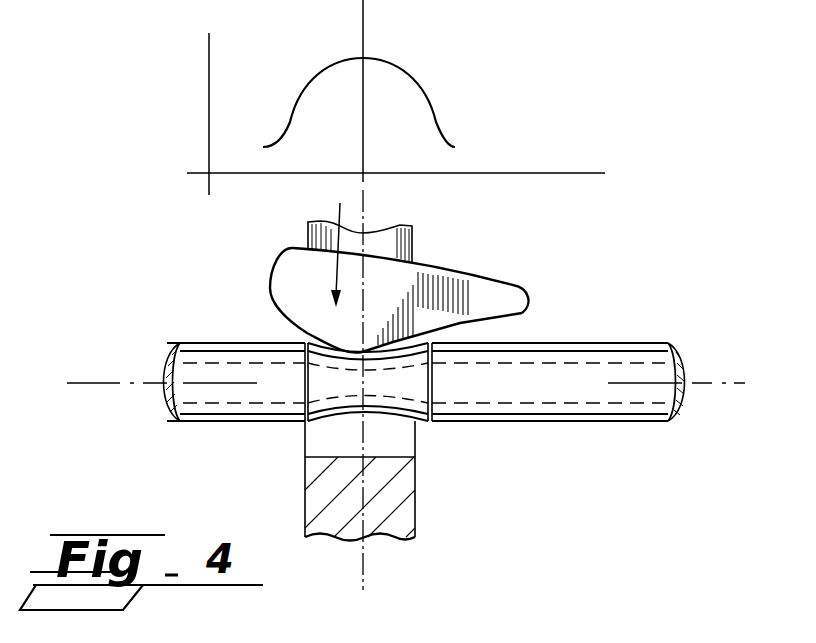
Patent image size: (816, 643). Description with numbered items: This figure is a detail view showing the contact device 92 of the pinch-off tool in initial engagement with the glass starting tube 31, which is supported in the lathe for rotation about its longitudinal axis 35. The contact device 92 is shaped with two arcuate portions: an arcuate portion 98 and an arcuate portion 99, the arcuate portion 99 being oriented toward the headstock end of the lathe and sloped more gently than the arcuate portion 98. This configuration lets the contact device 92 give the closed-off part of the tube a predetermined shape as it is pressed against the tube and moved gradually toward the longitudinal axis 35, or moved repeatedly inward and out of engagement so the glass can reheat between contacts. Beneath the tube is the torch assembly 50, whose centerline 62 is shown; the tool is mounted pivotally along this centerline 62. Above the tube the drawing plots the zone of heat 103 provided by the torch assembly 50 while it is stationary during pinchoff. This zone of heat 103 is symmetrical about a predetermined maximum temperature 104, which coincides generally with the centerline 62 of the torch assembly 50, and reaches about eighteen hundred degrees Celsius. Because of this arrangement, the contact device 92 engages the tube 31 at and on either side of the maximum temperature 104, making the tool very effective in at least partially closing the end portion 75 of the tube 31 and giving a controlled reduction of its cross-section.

The maximum temperature 104 is at (363, 17).
The zone of heat 103 is at (427, 97).
The contact device 92 is at (438, 272).
The arcuate portion 99 is at (475, 318).
The arcuate portion 98 is at (288, 325).
The glass starting tube 31 is at (625, 348).
The longitudinal axis 35 is at (88, 383).
The end portion 75 is at (342, 422).
The centerline 62 is at (360, 440).
The torch assembly 50 is at (422, 502).